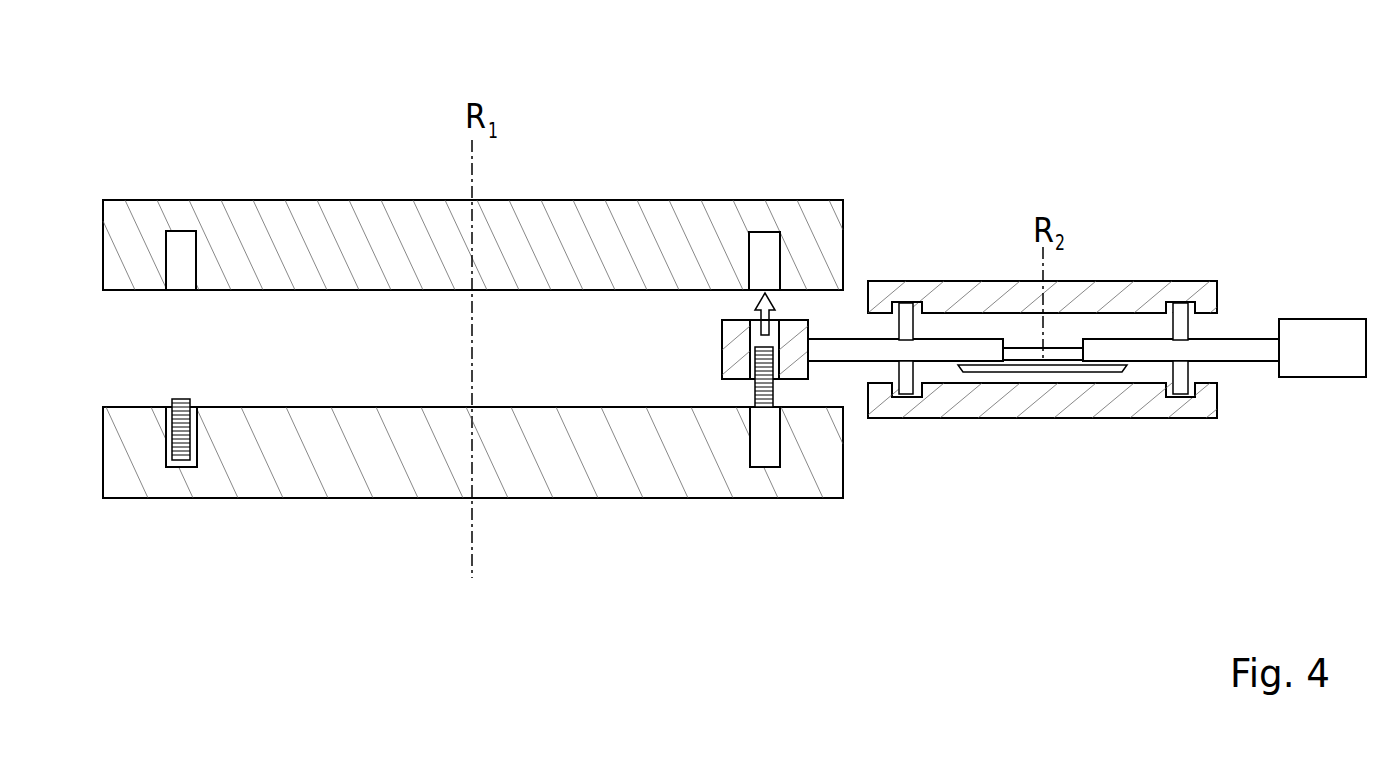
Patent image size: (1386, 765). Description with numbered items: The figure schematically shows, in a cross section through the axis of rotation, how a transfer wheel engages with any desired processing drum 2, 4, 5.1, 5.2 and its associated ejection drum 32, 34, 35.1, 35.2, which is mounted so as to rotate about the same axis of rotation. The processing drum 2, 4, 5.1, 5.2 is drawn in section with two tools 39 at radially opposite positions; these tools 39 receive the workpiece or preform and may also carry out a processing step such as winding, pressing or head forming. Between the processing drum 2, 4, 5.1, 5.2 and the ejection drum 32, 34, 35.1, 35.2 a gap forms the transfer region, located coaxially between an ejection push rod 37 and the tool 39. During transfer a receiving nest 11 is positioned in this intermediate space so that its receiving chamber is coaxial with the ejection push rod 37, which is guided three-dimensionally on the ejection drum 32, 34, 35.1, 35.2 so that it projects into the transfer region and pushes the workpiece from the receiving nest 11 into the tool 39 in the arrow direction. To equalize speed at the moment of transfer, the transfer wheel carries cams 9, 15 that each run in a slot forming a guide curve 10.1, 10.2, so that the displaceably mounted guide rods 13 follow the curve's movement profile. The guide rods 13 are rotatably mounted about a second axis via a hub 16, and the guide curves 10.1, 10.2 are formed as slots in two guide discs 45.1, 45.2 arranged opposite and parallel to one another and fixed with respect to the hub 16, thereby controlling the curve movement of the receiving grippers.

The processing drum 2 is at (473, 165).
The second processing drum 4 is at (473, 245).
The processing drum 5.1 is at (473, 245).
The processing drum 5.2 is at (289, 228).
The cam 9 is at (903, 303).
The guide curve 10.1 is at (1185, 400).
The guide curve 10.2 is at (1174, 302).
The receiving nest 11 is at (733, 358).
The guide rod 13 is at (848, 345).
The cam 15 is at (907, 362).
The hub 16 is at (1066, 350).
The ejection drum 32 is at (473, 519).
The ejection drum 34 is at (473, 448).
The ejection drum 35.1 is at (473, 448).
The ejection drum 35.2 is at (327, 470).
The ejection push rod 37 is at (773, 383).
The tool 39 is at (181, 262).
The guide disc 45.1 is at (1075, 400).
The guide disc 45.2 is at (993, 295).